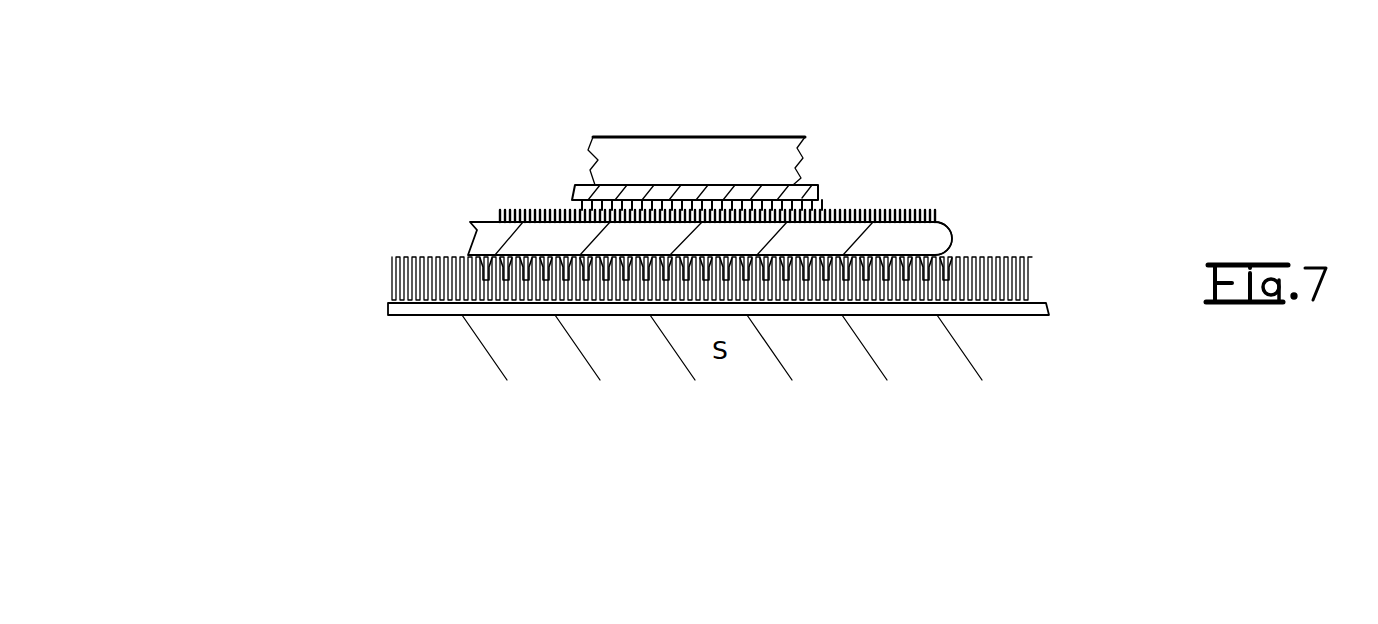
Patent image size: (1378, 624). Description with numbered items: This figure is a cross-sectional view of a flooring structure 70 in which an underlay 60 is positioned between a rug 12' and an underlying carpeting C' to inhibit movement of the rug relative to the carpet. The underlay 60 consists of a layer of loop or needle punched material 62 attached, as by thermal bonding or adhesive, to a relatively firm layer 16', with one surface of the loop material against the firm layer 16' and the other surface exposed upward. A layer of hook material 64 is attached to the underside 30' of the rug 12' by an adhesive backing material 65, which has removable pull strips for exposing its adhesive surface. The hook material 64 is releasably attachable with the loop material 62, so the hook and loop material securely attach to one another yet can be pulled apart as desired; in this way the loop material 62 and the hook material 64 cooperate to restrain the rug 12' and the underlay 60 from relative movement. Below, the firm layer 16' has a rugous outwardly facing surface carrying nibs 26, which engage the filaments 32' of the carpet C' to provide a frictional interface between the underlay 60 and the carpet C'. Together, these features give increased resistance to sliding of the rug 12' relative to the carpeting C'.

The flooring structure 70 is at (727, 125).
The rug 12' is at (745, 154).
The adhesive backing material 65 is at (776, 186).
The underside of the rug 30' is at (663, 176).
The underlay 60 is at (446, 190).
The loop or needle punched material 62 is at (497, 212).
The hook material 64 is at (823, 208).
The relatively firm layer 16' is at (1017, 237).
The carpeting C' is at (754, 278).
The nibs 26 is at (900, 277).
The filaments of the carpet 32' is at (677, 331).